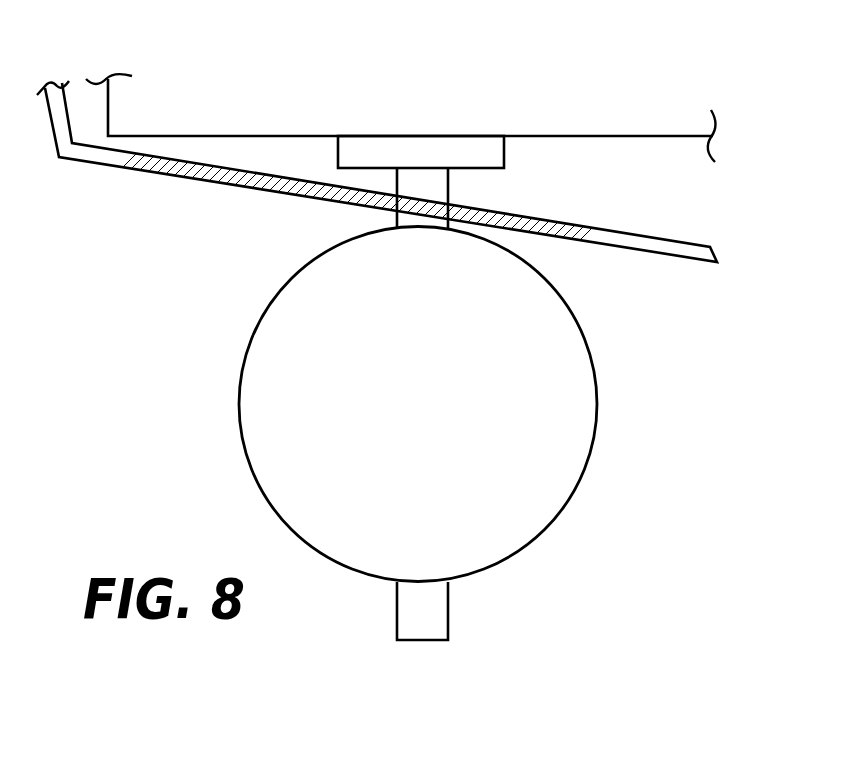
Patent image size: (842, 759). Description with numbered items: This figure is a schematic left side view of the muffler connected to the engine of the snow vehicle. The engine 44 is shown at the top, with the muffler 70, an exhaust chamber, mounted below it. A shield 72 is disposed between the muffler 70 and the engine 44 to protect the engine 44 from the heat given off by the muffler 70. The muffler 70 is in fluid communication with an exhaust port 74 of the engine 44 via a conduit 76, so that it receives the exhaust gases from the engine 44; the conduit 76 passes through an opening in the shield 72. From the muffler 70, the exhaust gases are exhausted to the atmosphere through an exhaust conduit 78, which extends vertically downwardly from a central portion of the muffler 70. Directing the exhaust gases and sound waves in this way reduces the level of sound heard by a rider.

The engine 44 is at (407, 115).
The muffler 70 is at (402, 415).
The shield 72 is at (173, 176).
The exhaust port 74 is at (505, 145).
The conduit 76 is at (449, 184).
The exhaust conduit 78 is at (449, 608).